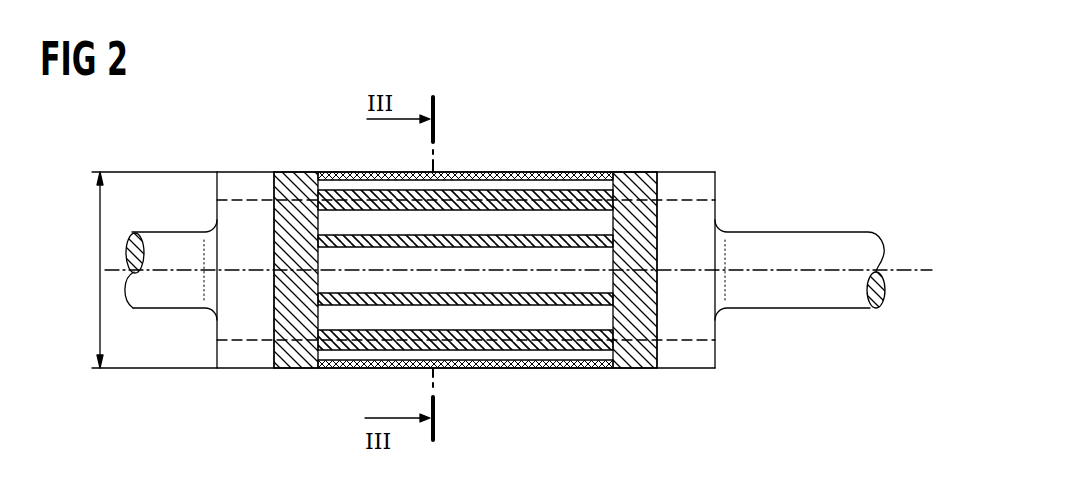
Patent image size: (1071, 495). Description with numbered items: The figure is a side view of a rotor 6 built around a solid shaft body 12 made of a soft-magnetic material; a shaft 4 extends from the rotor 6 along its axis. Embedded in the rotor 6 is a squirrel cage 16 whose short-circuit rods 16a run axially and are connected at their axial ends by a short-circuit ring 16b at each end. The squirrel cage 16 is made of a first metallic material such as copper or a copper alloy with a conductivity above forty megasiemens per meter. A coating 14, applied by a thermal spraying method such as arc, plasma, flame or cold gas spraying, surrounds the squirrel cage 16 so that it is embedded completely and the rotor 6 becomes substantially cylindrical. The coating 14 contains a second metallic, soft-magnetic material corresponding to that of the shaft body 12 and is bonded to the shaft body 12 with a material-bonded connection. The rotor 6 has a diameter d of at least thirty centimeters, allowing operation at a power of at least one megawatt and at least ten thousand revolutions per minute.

The shaft 4 is at (917, 268).
The rotor 6 is at (770, 108).
The shaft body 12 is at (692, 327).
The coating 14 is at (686, 184).
The squirrel cage 16 is at (468, 273).
The short-circuit rods 16a is at (507, 228).
The short-circuit ring 16b is at (294, 172).
The diameter d is at (98, 242).